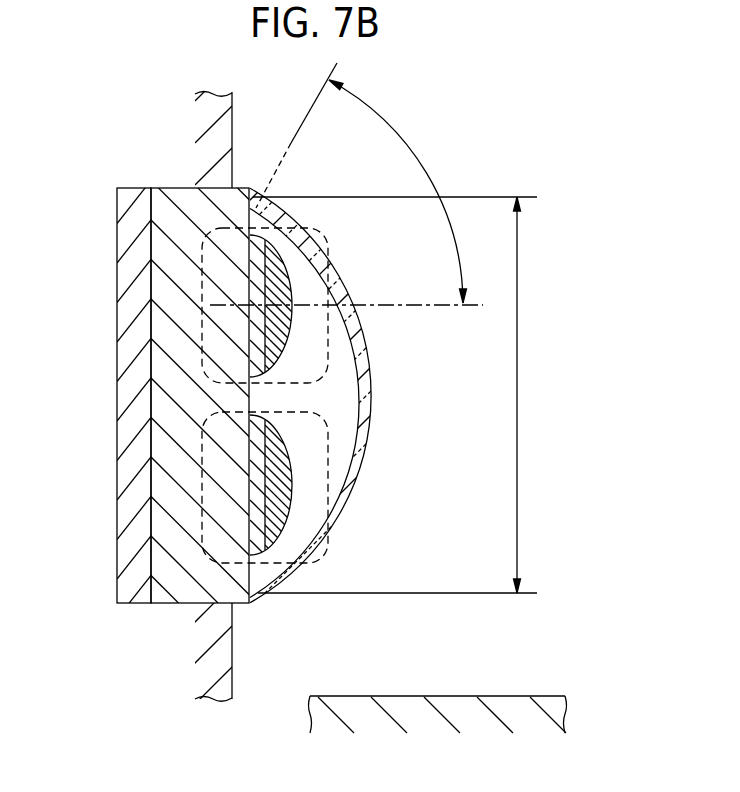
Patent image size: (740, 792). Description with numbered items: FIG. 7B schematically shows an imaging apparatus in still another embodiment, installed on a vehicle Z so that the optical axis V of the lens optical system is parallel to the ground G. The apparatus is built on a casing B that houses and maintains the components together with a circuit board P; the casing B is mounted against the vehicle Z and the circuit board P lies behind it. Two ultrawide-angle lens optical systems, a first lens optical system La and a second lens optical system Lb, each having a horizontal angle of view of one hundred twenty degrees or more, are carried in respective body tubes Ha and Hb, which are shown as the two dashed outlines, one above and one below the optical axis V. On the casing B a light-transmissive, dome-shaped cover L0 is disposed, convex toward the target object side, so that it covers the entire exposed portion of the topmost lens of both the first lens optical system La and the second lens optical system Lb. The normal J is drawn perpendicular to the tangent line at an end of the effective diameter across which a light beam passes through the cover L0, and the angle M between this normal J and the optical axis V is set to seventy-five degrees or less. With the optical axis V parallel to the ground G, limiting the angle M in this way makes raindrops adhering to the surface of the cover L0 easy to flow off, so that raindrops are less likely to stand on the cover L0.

The circuit board P is at (133, 589).
The casing B is at (170, 589).
The vehicle Z is at (232, 655).
The cover L0 is at (366, 426).
The second lens optical system Lb is at (340, 348).
The first lens optical system La is at (328, 477).
The optical axis V is at (302, 300).
The body tube Hb is at (258, 243).
The body tube Ha is at (258, 537).
The normal J is at (281, 157).
The angle M is at (398, 191).
The ground G is at (495, 695).